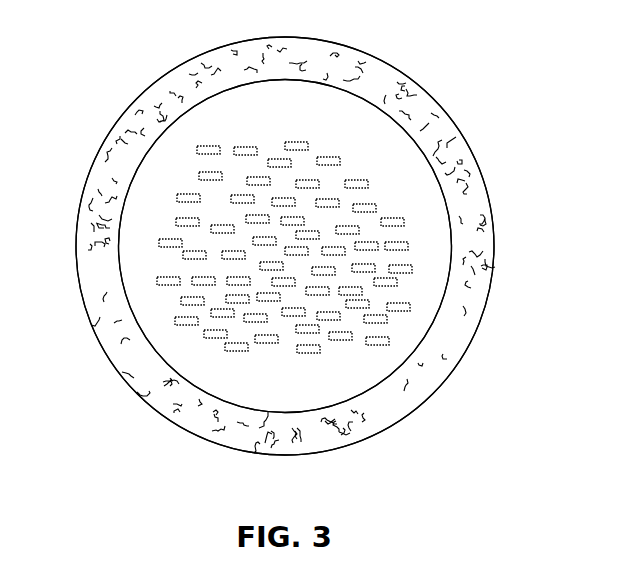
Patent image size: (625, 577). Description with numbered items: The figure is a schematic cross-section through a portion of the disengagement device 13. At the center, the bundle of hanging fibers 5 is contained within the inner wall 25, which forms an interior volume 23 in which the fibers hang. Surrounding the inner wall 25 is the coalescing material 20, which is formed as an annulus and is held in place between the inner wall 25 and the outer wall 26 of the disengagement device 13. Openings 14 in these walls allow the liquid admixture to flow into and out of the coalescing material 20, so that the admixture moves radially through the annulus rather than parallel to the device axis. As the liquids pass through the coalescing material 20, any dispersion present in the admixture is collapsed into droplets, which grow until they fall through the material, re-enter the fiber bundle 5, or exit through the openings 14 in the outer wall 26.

The disengagement device 13 is at (340, 46).
The openings 14 is at (495, 243).
The outer wall 26 is at (423, 385).
The coalescing material 20 is at (322, 432).
The inner wall 25 is at (240, 403).
The interior volume 23 is at (166, 168).
The bundle of hanging fibers 5 is at (368, 204).